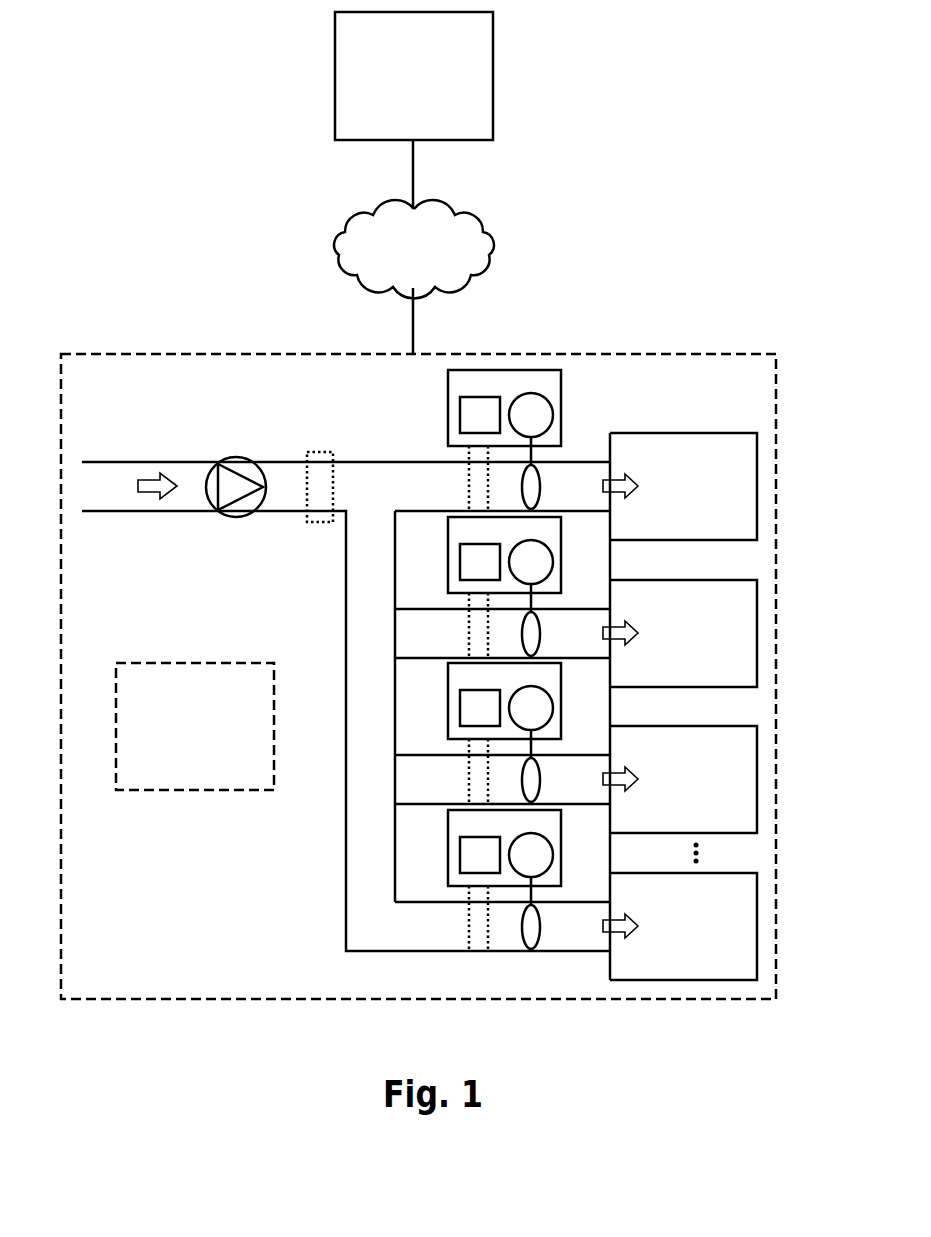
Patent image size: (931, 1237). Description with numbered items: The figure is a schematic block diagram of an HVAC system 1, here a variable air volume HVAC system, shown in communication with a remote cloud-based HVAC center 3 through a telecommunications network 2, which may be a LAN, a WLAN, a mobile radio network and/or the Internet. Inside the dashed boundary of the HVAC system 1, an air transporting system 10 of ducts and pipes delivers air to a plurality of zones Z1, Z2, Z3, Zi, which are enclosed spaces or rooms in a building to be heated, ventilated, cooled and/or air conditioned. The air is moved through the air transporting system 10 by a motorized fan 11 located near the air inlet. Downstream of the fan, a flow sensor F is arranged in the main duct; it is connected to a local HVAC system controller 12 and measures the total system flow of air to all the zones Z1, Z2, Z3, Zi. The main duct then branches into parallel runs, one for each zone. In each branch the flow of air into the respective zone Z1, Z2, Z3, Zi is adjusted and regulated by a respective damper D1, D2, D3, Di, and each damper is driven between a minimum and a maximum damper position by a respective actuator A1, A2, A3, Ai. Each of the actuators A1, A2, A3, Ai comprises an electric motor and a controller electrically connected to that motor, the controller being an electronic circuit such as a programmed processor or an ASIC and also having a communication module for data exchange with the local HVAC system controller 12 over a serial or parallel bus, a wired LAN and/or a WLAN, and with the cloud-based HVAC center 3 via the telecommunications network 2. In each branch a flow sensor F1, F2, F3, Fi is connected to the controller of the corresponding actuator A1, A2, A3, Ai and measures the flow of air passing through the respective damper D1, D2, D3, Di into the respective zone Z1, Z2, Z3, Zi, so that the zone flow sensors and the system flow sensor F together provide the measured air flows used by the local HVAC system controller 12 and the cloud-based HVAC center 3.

The HVAC system 1 is at (118, 1016).
The telecommunications network 2 is at (380, 275).
The cloud-based HVAC center 3 is at (343, 117).
The air transporting system 10 is at (352, 709).
The motorized fan 11 is at (242, 463).
The local HVAC system controller 12 is at (123, 768).
The flow sensor F is at (317, 455).
The flow sensor F1 is at (478, 458).
The flow sensor F2 is at (478, 605).
The flow sensor F3 is at (478, 751).
The flow sensor Fi is at (478, 898).
The actuator A1 is at (558, 397).
The actuator A2 is at (558, 544).
The actuator A3 is at (558, 690).
The actuator Ai is at (558, 837).
The damper D1 is at (537, 483).
The damper D2 is at (537, 630).
The damper D3 is at (537, 776).
The damper Di is at (537, 923).
The zone Z1 is at (747, 524).
The zone Z2 is at (747, 671).
The zone Z3 is at (747, 817).
The zone Zi is at (747, 964).